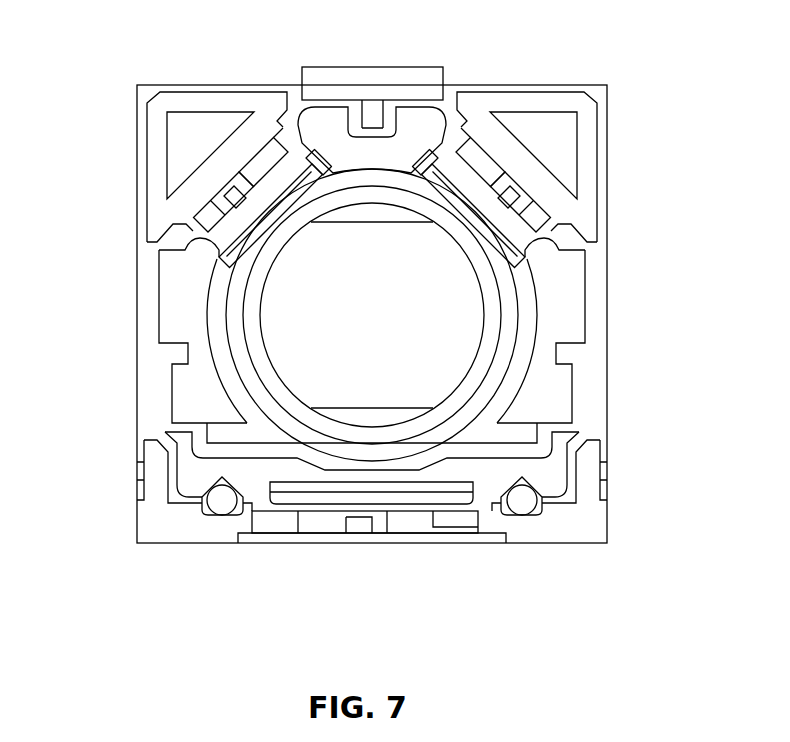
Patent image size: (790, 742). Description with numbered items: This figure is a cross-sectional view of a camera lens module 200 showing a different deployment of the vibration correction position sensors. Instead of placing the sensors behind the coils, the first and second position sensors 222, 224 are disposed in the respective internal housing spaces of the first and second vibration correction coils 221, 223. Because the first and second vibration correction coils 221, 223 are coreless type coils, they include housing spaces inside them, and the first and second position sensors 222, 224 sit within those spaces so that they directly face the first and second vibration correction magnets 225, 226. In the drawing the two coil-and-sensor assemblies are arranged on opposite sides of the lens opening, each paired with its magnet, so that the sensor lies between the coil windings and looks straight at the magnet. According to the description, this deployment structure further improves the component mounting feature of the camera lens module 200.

The camera lens module 200 is at (392, 38).
The first vibration correction coil 221 is at (528, 212).
The first position sensor 222 is at (501, 186).
The second vibration correction coil 223 is at (216, 212).
The second position sensor 224 is at (243, 186).
The first vibration correction magnet 225 is at (516, 252).
The second vibration correction magnet 226 is at (228, 252).